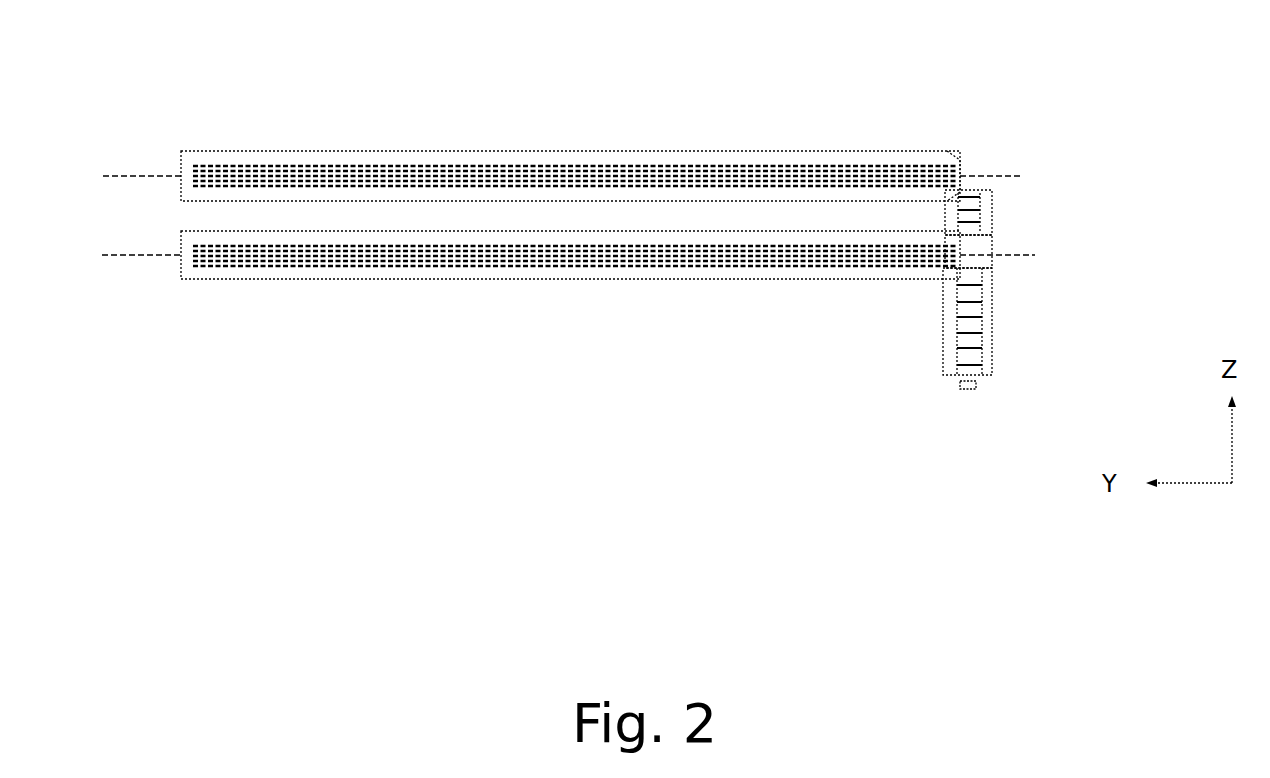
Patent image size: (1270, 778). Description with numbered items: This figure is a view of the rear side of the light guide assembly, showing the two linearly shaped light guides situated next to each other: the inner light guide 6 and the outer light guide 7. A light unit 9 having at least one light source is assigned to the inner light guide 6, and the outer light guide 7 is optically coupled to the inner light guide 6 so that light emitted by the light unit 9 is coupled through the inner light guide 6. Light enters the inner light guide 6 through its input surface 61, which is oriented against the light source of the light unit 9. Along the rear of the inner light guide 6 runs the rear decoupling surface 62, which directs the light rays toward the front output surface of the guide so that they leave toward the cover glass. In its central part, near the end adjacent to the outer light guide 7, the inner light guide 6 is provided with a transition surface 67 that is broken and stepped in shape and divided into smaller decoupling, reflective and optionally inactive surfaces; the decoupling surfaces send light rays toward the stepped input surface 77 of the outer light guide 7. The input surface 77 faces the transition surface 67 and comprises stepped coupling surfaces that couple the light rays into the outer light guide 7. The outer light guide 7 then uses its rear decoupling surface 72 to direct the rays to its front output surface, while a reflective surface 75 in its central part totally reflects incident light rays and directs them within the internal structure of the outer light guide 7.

The inner light guide 6 is at (278, 283).
The outer light guide 7 is at (381, 149).
The light unit 9 is at (968, 392).
The input surface 61 is at (980, 375).
The rear decoupling surface 62 is at (502, 270).
The transition surface 67 is at (953, 233).
The rear decoupling surface 72 is at (512, 165).
The reflective surface 75 is at (955, 164).
The input surface 77 is at (968, 252).